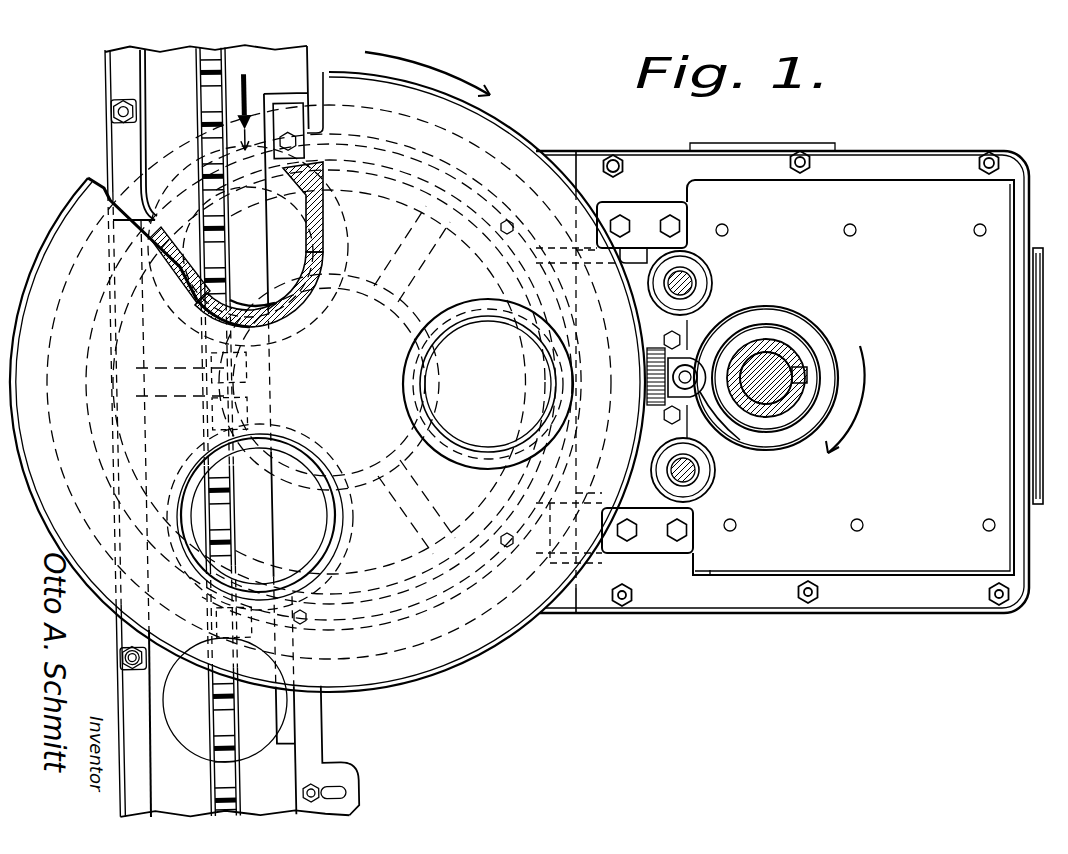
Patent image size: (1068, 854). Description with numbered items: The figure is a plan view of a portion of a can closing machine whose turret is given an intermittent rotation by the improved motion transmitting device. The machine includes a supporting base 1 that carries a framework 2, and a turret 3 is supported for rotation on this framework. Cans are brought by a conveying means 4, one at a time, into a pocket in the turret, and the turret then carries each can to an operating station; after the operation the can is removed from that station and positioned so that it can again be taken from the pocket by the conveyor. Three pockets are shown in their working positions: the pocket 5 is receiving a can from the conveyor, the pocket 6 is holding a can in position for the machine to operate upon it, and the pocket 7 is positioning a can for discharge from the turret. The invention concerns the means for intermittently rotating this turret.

The supporting base 1 is at (662, 593).
The framework 2 is at (850, 377).
The turret 3 is at (327, 372).
The conveying means 4 is at (197, 86).
The pocket 5 is at (248, 246).
The pocket 6 is at (418, 376).
The pocket 7 is at (260, 517).